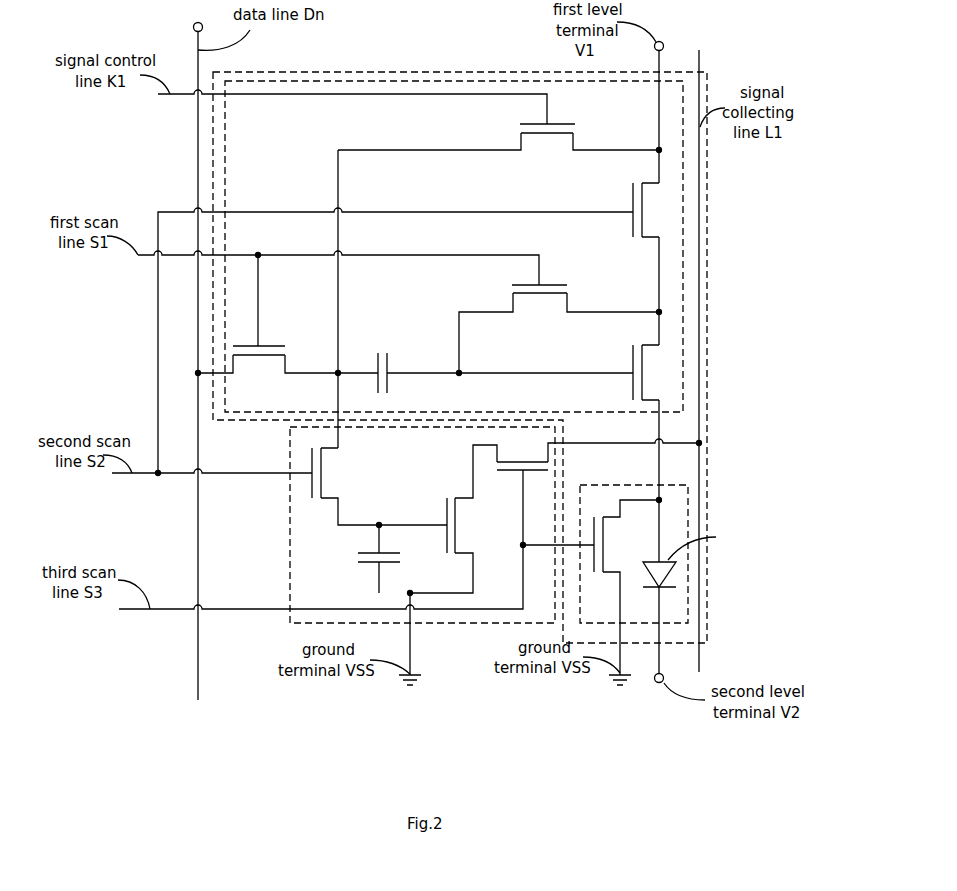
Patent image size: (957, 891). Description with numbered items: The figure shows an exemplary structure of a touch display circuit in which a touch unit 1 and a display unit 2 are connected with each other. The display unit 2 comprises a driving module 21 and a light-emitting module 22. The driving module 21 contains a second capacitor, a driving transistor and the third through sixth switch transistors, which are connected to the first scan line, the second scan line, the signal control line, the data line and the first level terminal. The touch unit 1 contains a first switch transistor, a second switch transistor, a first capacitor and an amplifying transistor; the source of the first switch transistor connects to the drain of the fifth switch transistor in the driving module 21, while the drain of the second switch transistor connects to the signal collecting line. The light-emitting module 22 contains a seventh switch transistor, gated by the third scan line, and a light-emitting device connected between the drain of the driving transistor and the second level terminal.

The touch unit 1 is at (290, 555).
The display unit 2 is at (347, 72).
The driving module 21 is at (683, 297).
The light-emitting module 22 is at (688, 490).